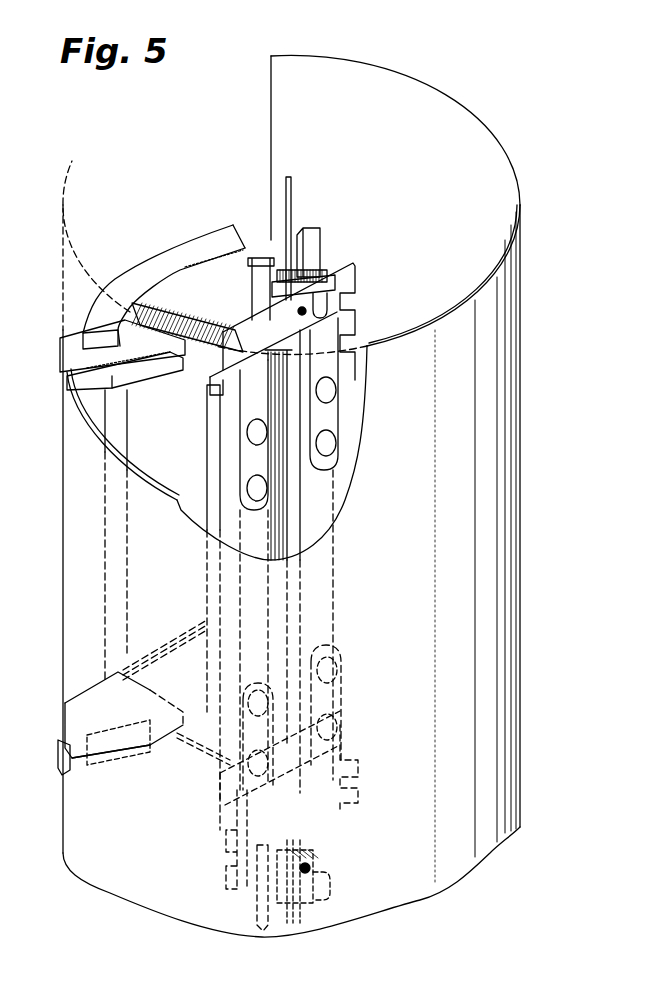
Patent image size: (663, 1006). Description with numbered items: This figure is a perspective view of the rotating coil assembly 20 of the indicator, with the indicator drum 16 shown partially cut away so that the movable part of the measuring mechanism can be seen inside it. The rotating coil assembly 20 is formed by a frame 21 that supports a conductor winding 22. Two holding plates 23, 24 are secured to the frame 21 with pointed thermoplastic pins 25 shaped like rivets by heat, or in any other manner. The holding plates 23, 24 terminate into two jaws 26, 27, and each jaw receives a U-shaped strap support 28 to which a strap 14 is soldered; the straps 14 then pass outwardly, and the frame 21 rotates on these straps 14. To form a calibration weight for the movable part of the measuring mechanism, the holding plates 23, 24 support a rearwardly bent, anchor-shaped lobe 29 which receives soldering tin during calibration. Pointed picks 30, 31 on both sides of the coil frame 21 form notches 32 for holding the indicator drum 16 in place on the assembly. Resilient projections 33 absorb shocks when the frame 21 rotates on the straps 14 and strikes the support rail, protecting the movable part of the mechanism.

The straps 14 is at (291, 193).
The indicator drum 16 is at (140, 887).
The rotating coil assembly 20 is at (166, 233).
The frame 21 is at (110, 590).
The conductor winding 22 is at (280, 493).
The holding plate 23 is at (323, 335).
The holding plate 24 is at (327, 832).
The pointed thermoplastic pins 25 is at (336, 393).
The jaw 26 is at (267, 268).
The jaw 27 is at (260, 895).
The U-shaped strap support 28 is at (316, 278).
The anchor-shaped lobe 29 is at (125, 280).
The pointed pick 30 is at (158, 343).
The pointed pick 31 is at (101, 739).
The notch 32 is at (65, 760).
The resilient projection 33 is at (138, 748).